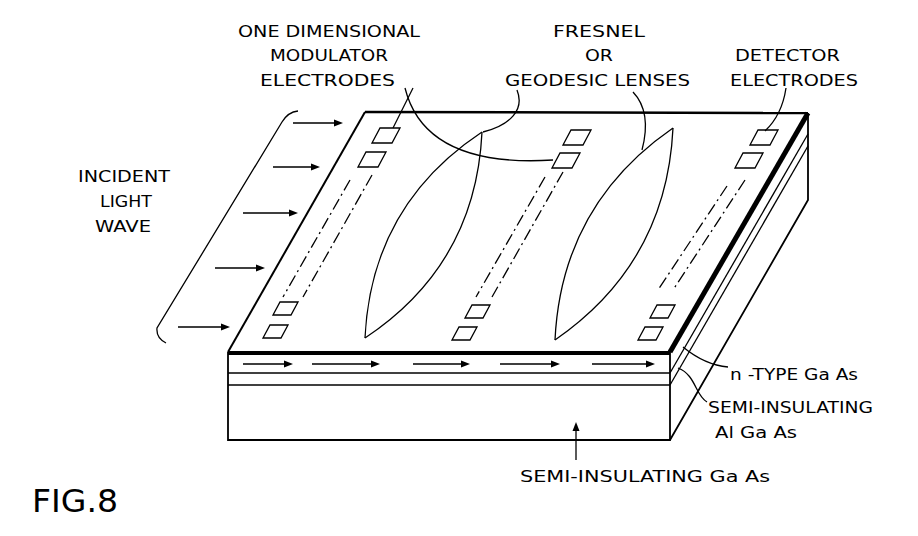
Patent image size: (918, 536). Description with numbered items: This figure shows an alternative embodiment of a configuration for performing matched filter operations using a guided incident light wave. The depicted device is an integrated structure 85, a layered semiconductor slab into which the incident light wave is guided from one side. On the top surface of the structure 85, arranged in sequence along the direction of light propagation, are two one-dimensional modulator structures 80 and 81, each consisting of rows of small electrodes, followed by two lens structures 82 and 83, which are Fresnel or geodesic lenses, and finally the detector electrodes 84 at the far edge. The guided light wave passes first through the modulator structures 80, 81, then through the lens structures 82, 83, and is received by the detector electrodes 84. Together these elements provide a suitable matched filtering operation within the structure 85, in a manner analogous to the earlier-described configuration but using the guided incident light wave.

The one-dimensional modulator structure 80 is at (316, 296).
The one-dimensional modulator structure 81 is at (508, 295).
The lens structure 82 is at (412, 297).
The lens structure 83 is at (606, 306).
The detector electrodes 84 is at (725, 158).
The structure 85 is at (288, 454).